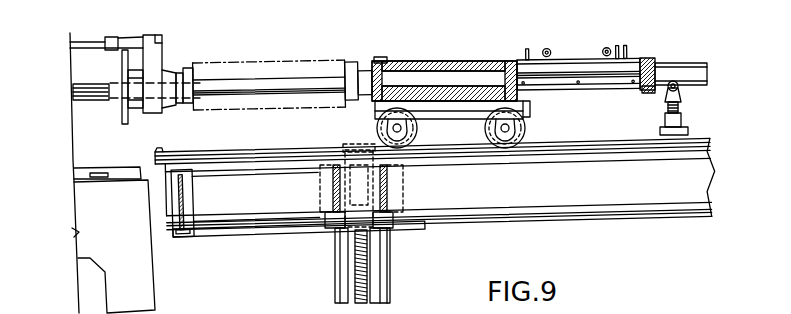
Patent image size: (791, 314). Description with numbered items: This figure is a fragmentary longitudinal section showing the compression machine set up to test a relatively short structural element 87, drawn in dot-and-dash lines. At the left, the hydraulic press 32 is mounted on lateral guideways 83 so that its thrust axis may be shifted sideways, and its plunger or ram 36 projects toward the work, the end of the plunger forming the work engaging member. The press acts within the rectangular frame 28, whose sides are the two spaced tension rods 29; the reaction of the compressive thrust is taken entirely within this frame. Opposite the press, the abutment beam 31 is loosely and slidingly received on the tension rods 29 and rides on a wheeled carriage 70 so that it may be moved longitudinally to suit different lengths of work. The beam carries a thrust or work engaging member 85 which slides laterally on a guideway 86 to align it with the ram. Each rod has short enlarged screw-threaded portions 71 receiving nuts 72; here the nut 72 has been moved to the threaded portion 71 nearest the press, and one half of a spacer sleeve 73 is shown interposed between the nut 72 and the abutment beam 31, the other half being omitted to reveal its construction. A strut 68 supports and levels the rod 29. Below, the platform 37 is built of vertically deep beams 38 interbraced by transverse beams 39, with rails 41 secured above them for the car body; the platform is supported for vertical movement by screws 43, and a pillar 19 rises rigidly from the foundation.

The hydraulic press 32 is at (64, 67).
The tension rods 29 is at (78, 99).
The plunger or ram 36 is at (157, 66).
The short structural element 87 is at (307, 63).
The thrust or work engaging member 85 is at (375, 70).
The guideway 86 is at (381, 61).
The rectangular frame 28 is at (437, 54).
The abutment beam 31 is at (472, 54).
The wheeled carriage 70 is at (467, 115).
The spacer sleeves 73 is at (578, 58).
The nuts 72 is at (647, 57).
The screw-threaded portions 71 is at (643, 94).
The struts 68 is at (682, 116).
The rails 41 is at (563, 134).
The platform 37 is at (655, 221).
The vertically deep beams 38 is at (457, 205).
The transverse beams 39 is at (182, 208).
The lateral guideways 83 is at (90, 173).
The pillars 19 is at (388, 246).
The screws 43 is at (370, 273).